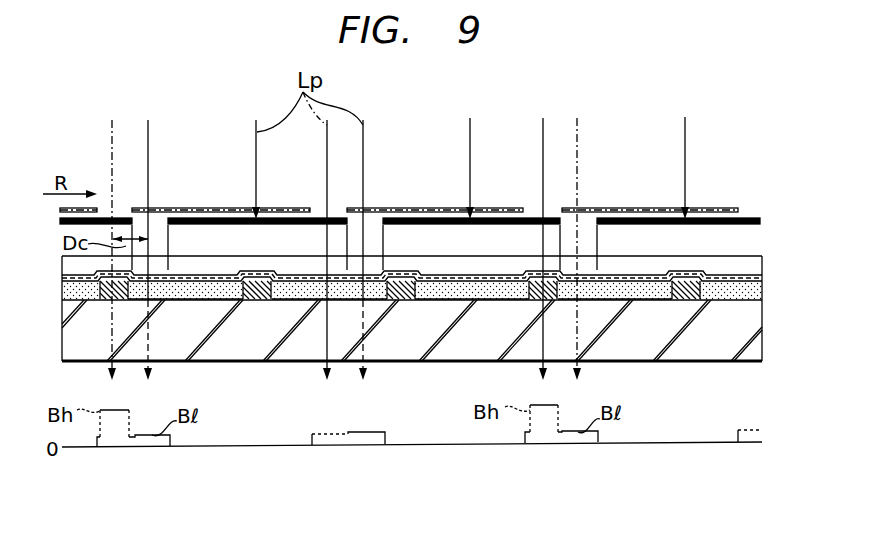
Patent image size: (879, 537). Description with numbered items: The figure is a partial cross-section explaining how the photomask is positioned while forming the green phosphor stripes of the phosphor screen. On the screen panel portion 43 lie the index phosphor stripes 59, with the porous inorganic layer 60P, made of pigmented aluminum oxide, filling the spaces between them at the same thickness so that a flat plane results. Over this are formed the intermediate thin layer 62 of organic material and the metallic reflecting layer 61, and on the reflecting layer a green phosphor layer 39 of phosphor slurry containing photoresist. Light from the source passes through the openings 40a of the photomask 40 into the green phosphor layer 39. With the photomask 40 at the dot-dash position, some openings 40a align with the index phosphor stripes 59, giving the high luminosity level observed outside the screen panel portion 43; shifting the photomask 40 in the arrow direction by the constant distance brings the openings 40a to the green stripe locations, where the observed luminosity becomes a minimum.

The green phosphor layer 39 is at (696, 256).
The photomask 40 is at (222, 218).
The openings of the photomask 40a is at (120, 212).
The screen panel portion 43 is at (733, 359).
The index phosphor stripes 59 is at (104, 300).
The porous inorganic layer 60P is at (176, 300).
The metallic reflecting layer 61 is at (66, 276).
The intermediate thin layer 62 is at (63, 290).